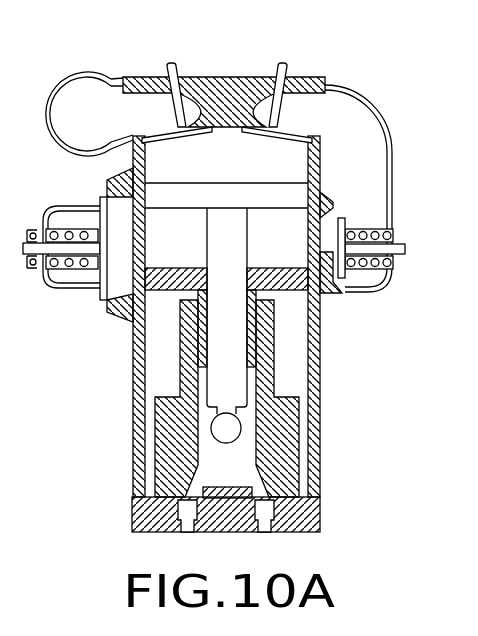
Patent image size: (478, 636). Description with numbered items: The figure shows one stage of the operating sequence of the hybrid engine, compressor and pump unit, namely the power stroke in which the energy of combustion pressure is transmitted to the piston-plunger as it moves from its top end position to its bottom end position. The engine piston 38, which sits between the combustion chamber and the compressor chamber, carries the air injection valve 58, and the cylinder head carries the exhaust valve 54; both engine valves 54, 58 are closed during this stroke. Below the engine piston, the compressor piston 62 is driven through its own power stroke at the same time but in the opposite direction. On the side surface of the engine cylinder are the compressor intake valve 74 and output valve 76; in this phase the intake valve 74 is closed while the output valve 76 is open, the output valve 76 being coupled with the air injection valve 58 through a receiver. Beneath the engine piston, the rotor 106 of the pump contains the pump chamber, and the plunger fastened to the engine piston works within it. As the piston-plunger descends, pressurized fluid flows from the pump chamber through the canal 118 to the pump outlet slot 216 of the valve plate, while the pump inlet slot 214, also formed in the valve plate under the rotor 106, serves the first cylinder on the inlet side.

The exhaust valve 54 is at (168, 63).
The air injection valve 58 is at (288, 63).
The piston 38 is at (233, 193).
The compressor piston 62 is at (237, 278).
The intake valve 74 is at (82, 291).
The output valve 76 is at (347, 292).
The rotor 106 is at (287, 443).
The canal 118 is at (180, 470).
The pump inlet slot 214 is at (285, 506).
The pump outlet slot 216 is at (178, 506).